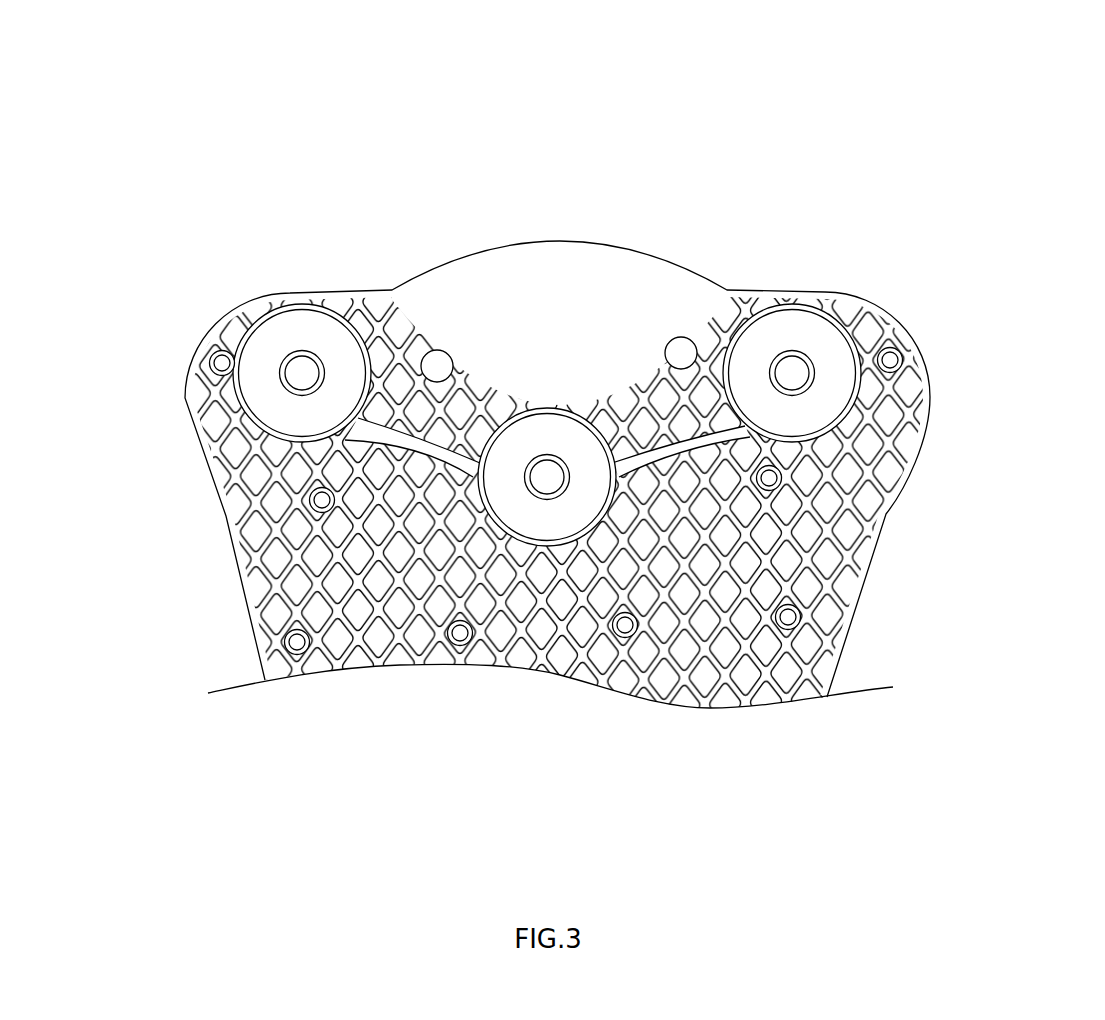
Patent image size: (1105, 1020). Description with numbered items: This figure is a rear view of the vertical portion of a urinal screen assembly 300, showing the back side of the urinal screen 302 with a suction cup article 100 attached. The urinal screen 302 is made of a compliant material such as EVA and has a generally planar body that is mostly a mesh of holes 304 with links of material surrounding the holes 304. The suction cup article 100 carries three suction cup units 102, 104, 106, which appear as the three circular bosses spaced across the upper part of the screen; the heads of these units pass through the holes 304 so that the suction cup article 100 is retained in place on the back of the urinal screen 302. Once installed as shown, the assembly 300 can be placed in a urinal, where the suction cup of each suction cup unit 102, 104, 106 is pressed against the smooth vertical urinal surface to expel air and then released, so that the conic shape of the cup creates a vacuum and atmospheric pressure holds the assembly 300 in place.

The urinal screen assembly 300 is at (107, 49).
The urinal screen 302 is at (253, 628).
The holes 304 is at (227, 475).
The suction cup article 100 is at (855, 327).
The suction cup unit 102 is at (810, 317).
The suction cup unit 104 is at (553, 423).
The suction cup unit 106 is at (305, 313).